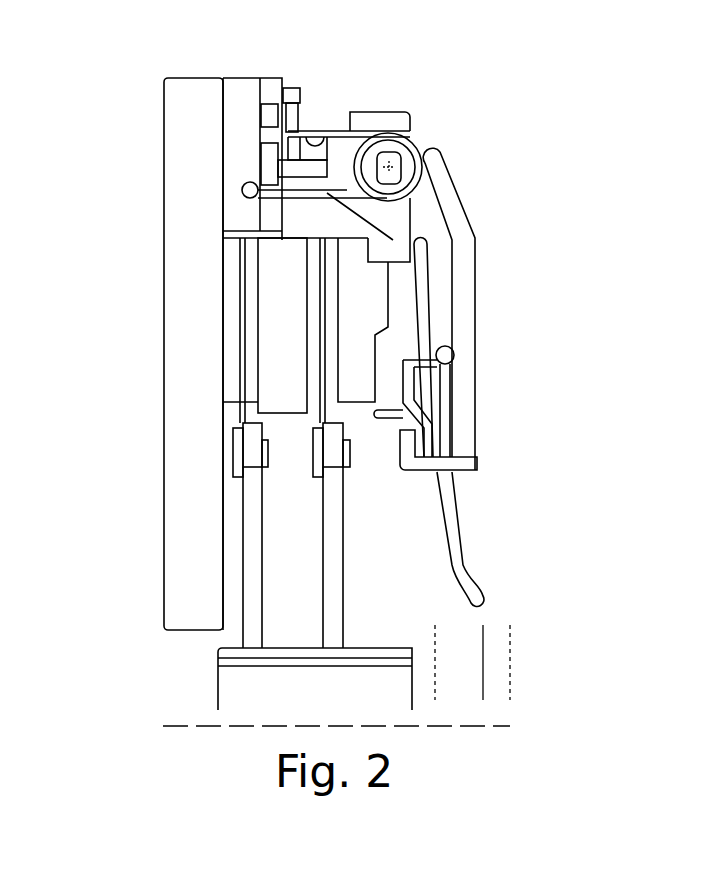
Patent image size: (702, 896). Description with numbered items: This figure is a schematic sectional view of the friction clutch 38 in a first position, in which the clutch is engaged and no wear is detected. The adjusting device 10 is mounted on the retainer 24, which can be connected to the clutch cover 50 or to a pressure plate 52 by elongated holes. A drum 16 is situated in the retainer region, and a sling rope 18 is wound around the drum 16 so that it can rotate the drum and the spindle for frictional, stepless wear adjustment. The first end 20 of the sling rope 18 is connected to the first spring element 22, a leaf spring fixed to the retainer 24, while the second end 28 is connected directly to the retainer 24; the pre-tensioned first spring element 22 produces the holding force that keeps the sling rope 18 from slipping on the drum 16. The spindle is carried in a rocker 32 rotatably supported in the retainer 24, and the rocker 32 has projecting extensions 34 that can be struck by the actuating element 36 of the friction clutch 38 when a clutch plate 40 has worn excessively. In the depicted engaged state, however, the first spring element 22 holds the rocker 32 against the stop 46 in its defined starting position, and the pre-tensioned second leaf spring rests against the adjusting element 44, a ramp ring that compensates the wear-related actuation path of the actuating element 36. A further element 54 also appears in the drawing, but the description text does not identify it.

The adjusting device 10 is at (392, 86).
The drum 16 is at (412, 163).
The sling rope 18 is at (335, 133).
The first end 20 is at (260, 130).
The first spring element 22 is at (293, 87).
The retainer 24 is at (260, 147).
The second end 28 is at (242, 190).
The rocker 32 is at (390, 123).
The projecting extensions 34 is at (425, 246).
The actuating element 36 is at (443, 422).
The friction clutch 38 is at (140, 108).
The clutch plate 40 is at (253, 513).
The adjusting element 44 is at (413, 227).
The stop 46 is at (313, 140).
The clutch cover 50 is at (463, 372).
The pressure plate 52 is at (270, 268).
The frame wall 54 is at (198, 398).